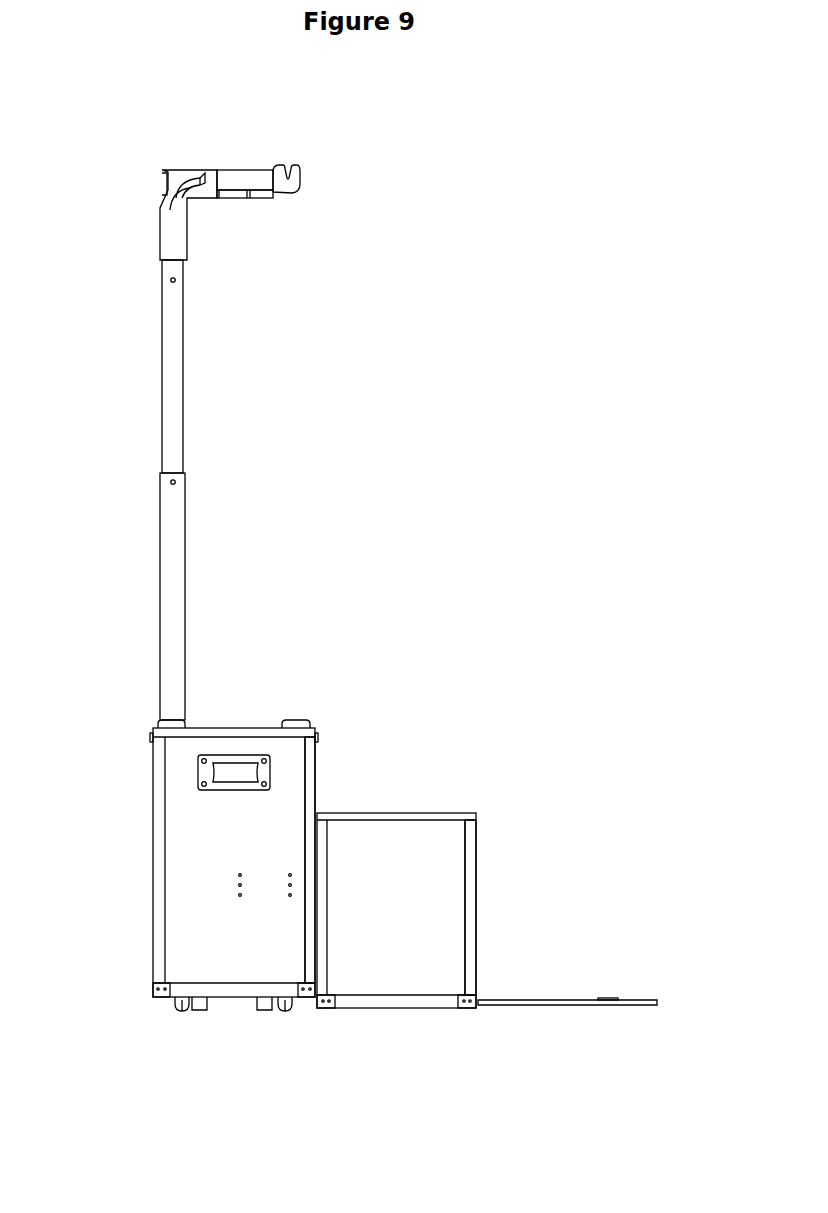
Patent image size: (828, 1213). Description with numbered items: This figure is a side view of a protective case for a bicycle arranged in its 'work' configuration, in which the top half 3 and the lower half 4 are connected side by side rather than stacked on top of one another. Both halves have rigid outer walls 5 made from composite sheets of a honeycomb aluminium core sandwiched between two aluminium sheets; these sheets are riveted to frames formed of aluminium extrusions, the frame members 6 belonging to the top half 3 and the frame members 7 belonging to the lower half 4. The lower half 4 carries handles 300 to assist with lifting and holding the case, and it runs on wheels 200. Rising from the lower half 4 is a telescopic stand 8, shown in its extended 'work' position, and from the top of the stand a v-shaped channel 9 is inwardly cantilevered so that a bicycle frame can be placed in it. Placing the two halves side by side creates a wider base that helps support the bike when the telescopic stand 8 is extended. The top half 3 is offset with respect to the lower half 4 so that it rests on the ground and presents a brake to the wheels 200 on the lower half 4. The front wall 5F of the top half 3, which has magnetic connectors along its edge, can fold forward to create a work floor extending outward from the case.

The v-shaped channel 9 is at (290, 192).
The telescopic stand 8 is at (178, 535).
The frame members 7 is at (313, 748).
The lower half 4 is at (146, 847).
The handles 300 is at (222, 785).
The wheels 200 is at (186, 1010).
The frame members 6 is at (472, 848).
The top half 3 is at (486, 941).
The front wall 5F is at (565, 1000).
The rigid outer walls 5 is at (225, 853).